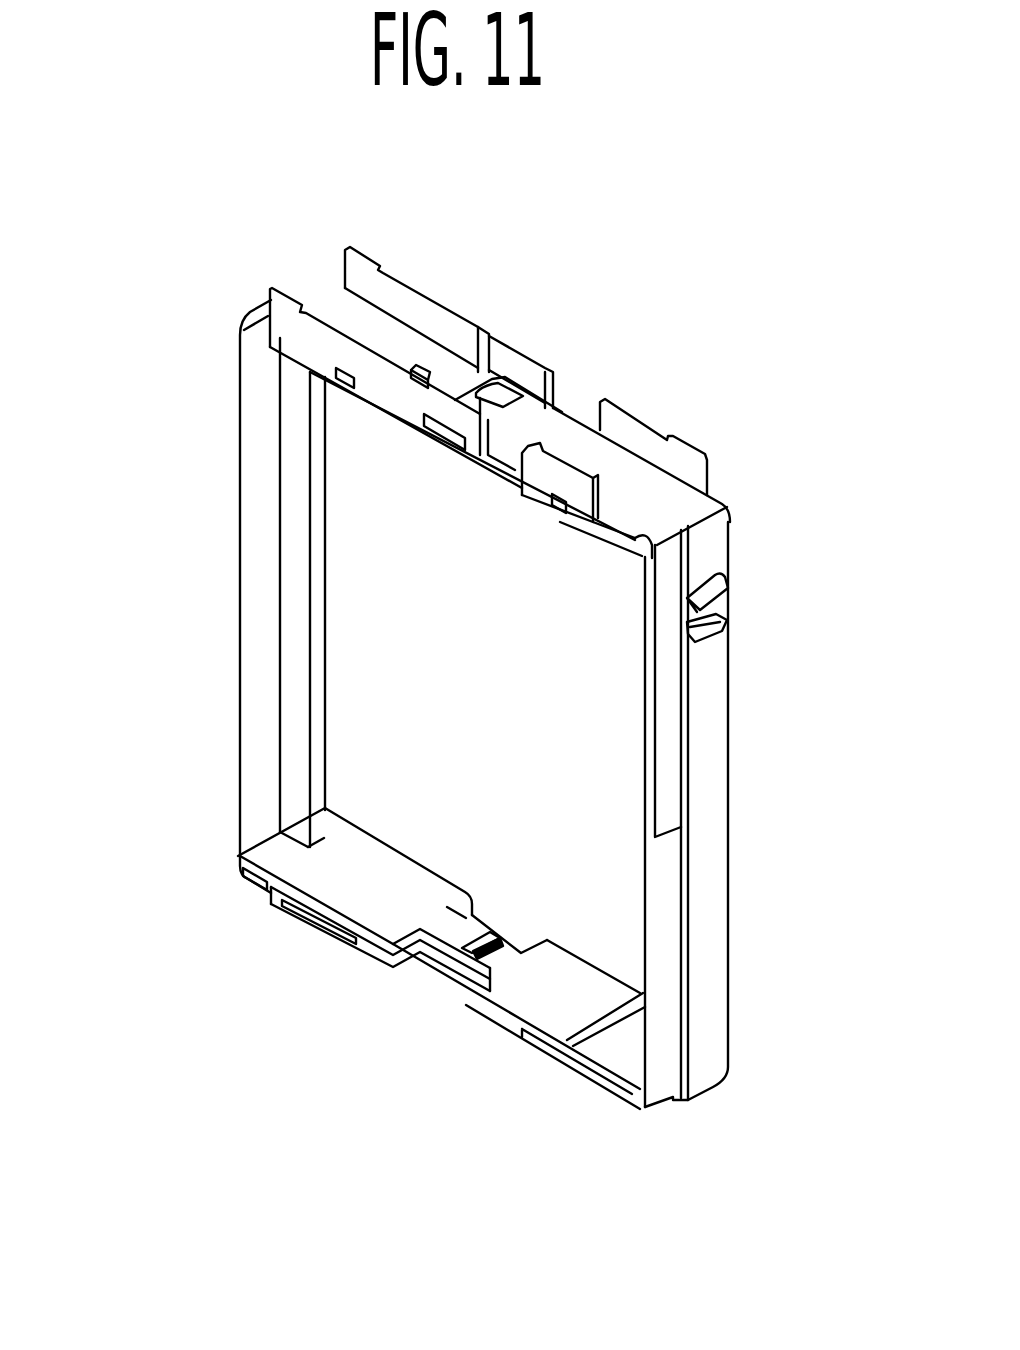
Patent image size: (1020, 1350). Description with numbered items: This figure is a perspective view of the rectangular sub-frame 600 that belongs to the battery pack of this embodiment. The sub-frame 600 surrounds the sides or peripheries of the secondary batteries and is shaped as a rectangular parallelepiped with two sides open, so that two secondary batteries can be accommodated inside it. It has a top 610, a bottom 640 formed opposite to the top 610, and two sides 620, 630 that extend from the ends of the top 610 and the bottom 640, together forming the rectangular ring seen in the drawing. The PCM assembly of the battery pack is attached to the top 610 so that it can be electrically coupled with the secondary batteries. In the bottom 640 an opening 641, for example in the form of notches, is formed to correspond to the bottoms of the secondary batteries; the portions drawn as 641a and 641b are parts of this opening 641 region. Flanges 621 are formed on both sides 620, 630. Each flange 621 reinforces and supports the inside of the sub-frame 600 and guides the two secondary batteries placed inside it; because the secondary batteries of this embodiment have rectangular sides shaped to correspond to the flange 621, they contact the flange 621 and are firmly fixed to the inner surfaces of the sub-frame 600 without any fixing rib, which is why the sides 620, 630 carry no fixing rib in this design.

The sub-frame 600 is at (722, 251).
The top 610 is at (672, 492).
The side 620 is at (224, 378).
The flange 621 is at (292, 497).
The side 630 is at (762, 750).
The bottom 640 is at (322, 975).
The opening 641 is at (503, 1128).
The first guide portion 641a is at (413, 975).
The second guide portion 641b is at (498, 918).